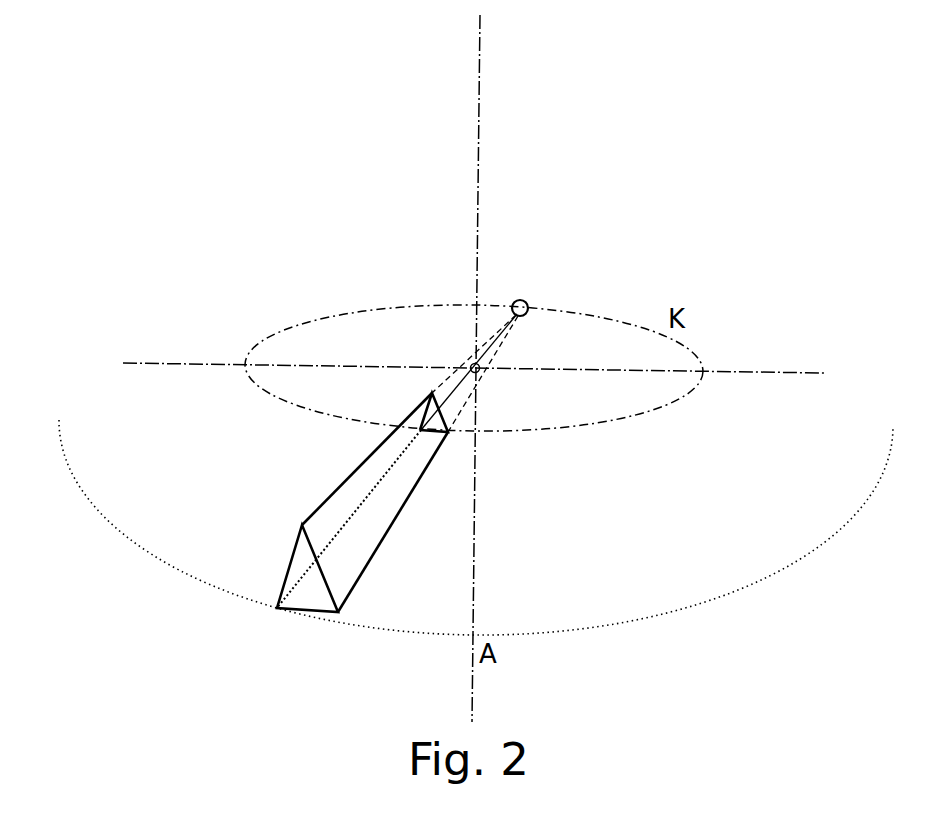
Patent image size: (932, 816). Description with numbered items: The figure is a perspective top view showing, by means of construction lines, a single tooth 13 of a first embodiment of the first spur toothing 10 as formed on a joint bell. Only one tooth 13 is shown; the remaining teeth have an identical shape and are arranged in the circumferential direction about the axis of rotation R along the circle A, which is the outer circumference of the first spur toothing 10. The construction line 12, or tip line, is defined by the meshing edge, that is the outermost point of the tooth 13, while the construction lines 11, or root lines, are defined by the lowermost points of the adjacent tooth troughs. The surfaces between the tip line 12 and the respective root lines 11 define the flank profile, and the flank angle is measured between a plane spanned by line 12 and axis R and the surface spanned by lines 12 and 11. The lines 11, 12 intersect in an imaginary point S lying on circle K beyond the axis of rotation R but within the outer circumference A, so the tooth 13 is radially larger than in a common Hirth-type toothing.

The first spur toothing 10 is at (672, 237).
The root line 11 is at (357, 507).
The tip line 12 is at (350, 467).
The tooth 13 is at (307, 612).